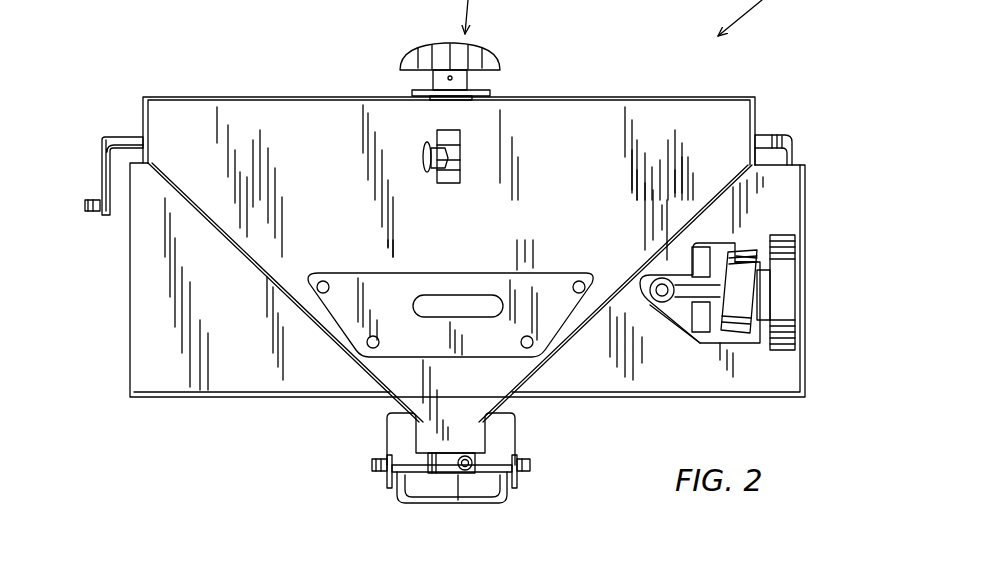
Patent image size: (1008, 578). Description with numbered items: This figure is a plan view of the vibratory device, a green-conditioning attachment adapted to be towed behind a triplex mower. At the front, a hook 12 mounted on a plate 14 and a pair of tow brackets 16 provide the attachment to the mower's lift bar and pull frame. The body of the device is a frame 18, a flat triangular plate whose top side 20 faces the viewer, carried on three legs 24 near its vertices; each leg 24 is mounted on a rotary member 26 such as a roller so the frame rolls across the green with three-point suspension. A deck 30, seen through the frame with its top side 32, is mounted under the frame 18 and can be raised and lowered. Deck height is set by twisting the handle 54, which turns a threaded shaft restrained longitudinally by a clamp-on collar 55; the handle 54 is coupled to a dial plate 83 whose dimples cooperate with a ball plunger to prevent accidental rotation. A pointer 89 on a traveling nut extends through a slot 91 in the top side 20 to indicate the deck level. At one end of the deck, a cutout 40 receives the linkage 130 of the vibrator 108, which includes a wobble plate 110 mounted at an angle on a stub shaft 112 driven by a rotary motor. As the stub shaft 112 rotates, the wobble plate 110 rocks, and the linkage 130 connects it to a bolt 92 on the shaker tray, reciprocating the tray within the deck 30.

The hook 12 is at (378, 393).
The plate 14 is at (350, 345).
The tow brackets 16 is at (86, 205).
The frame 18 is at (289, 92).
The top side 20 is at (318, 148).
The legs 24 is at (398, 438).
The rotary member 26 is at (490, 503).
The deck 30 is at (128, 322).
The top side 32 is at (170, 352).
The cutout 40 is at (733, 247).
The handle 54 is at (494, 46).
The clamp-on collar 55 is at (440, 475).
The dial plate 83 is at (490, 92).
The pointer 89 is at (446, 154).
The slot 91 is at (440, 130).
The bolt 92 is at (660, 302).
The vibrator 108 is at (822, 273).
The wobble plate 110 is at (750, 252).
The stub shaft 112 is at (762, 325).
The linkage 130 is at (686, 306).